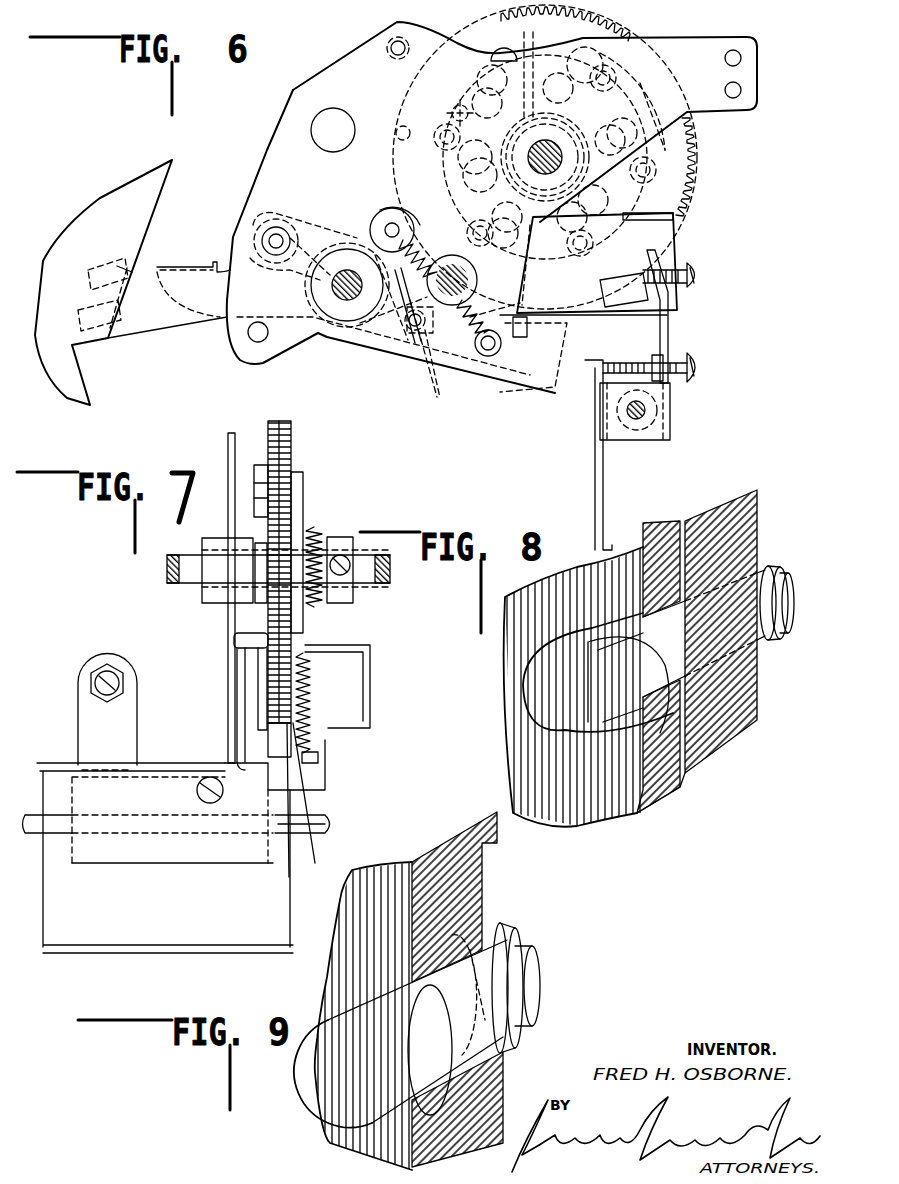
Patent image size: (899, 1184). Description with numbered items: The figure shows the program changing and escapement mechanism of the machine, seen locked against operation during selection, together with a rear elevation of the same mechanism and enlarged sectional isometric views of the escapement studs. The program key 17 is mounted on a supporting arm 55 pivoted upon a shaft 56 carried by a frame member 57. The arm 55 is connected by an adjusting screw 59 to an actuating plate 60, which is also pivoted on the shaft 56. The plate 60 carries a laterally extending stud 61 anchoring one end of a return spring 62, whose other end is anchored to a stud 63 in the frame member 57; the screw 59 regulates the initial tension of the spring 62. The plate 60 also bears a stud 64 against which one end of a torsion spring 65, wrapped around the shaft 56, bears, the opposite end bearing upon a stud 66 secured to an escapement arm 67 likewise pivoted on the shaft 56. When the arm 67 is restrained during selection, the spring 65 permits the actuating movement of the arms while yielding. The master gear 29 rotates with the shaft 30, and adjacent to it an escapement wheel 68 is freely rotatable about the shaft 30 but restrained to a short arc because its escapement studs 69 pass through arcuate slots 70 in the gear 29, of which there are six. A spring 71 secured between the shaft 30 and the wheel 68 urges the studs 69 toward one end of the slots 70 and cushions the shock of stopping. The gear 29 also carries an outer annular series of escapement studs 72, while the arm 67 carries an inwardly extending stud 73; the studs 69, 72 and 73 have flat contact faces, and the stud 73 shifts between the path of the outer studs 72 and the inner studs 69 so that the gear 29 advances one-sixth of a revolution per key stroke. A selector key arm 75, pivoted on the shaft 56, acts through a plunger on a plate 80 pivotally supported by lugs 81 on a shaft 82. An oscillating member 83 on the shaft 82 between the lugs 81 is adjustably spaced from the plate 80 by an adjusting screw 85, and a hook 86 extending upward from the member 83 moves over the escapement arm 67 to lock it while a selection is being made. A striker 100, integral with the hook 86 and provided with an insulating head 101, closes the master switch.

In FIG. 6, the program key 17 is at (98, 218).
In FIG. 6, the master gear 29 is at (483, 25).
In FIG. 7, the master gear 29 is at (292, 450).
In FIG. 8, the master gear 29 is at (658, 543).
In FIG. 9, the master gear 29 is at (463, 907).
In FIG. 6, the shaft 30 is at (555, 148).
In FIG. 7, the shaft 30 is at (180, 587).
In FIG. 6, the supporting arm 55 is at (143, 325).
In FIG. 6, the shaft 56 is at (348, 300).
In FIG. 6, the frame member 57 is at (318, 90).
In FIG. 7, the frame member 57 is at (228, 485).
In FIG. 6, the adjusting screw 59 is at (278, 230).
In FIG. 6, the actuating plate 60 is at (287, 278).
In FIG. 6, the stud 61 is at (386, 222).
In FIG. 6, the return spring 62 is at (427, 237).
In FIG. 6, the stud 63 is at (490, 356).
In FIG. 7, the stud 63 is at (315, 763).
In FIG. 6, the stud 64 is at (478, 285).
In FIG. 7, the stud 64 is at (310, 697).
In FIG. 6, the torsion spring 65 is at (438, 399).
In FIG. 7, the torsion spring 65 is at (300, 800).
In FIG. 6, the stud 66 is at (417, 360).
In FIG. 6, the escapement arm 67 is at (653, 240).
In FIG. 6, the escapement wheel 68 is at (548, 52).
In FIG. 7, the escapement wheel 68 is at (303, 500).
In FIG. 8, the escapement wheel 68 is at (737, 540).
In FIG. 6, the escapement studs 69 is at (457, 113).
In FIG. 8, the escapement studs 69 is at (668, 757).
In FIG. 6, the arcuate slots 70 is at (417, 92).
In FIG. 8, the arcuate slots 70 is at (570, 677).
In FIG. 6, the spring 71 is at (523, 52).
In FIG. 7, the spring 71 is at (318, 533).
In FIG. 6, the escapement studs 72 is at (648, 100).
In FIG. 7, the escapement studs 72 is at (258, 470).
In FIG. 8, the escapement studs 72 is at (696, 644).
In FIG. 9, the escapement studs 72 is at (423, 1047).
In FIG. 6, the stud 73 is at (403, 133).
In FIG. 6, the arm 75 is at (188, 260).
In FIG. 6, the plate 80 is at (595, 484).
In FIG. 7, the plate 80 is at (162, 930).
In FIG. 7, the lugs 81 is at (65, 857).
In FIG. 6, the shaft 82 is at (640, 417).
In FIG. 7, the shaft 82 is at (334, 830).
In FIG. 6, the oscillating member 83 is at (673, 410).
In FIG. 7, the oscillating member 83 is at (185, 855).
In FIG. 6, the adjusting screw 85 is at (697, 357).
In FIG. 7, the adjusting screw 85 is at (207, 778).
In FIG. 6, the hook 86 is at (660, 213).
In FIG. 7, the hook 86 is at (234, 643).
In FIG. 6, the striker 100 is at (670, 332).
In FIG. 7, the striker 100 is at (88, 740).
In FIG. 6, the insulating head 101 is at (700, 278).
In FIG. 7, the insulating head 101 is at (93, 673).